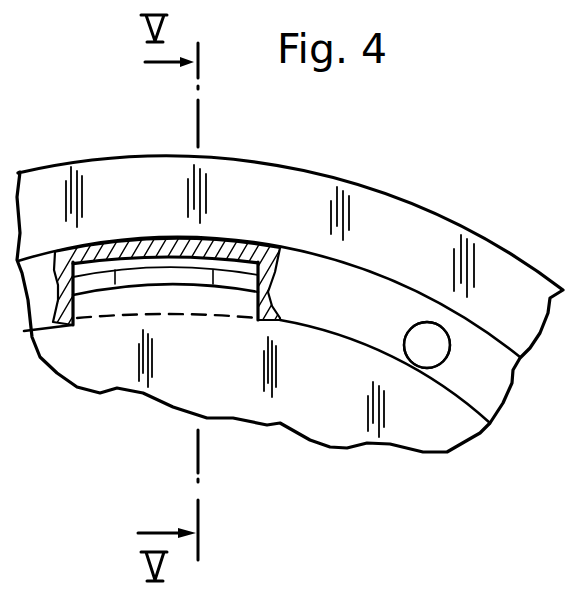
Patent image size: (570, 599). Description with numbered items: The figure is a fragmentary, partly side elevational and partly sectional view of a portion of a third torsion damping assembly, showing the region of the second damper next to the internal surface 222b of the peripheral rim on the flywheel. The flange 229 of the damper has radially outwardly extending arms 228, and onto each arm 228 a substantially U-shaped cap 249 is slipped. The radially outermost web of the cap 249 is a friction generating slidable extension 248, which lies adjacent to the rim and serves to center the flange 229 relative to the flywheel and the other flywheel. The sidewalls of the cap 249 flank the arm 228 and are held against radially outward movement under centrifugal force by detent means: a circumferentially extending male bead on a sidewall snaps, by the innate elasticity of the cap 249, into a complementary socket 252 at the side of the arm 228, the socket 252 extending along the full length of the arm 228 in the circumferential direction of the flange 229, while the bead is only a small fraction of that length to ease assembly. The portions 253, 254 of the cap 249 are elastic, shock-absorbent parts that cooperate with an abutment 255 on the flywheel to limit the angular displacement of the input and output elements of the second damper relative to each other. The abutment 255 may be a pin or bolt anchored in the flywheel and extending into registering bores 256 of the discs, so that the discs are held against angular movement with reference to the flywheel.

The internal surface 222b is at (366, 271).
The radially outwardly extending arm 228 is at (235, 268).
The flange 229 is at (123, 380).
The slidable extension 248 is at (160, 240).
The cap 249 is at (108, 242).
The socket 252 is at (92, 290).
The elastic shock-absorbent portion of cap 253 is at (63, 256).
The elastic shock-absorbent portion of cap 254 is at (272, 320).
The abutment 255 is at (416, 341).
The bore 256 is at (416, 341).